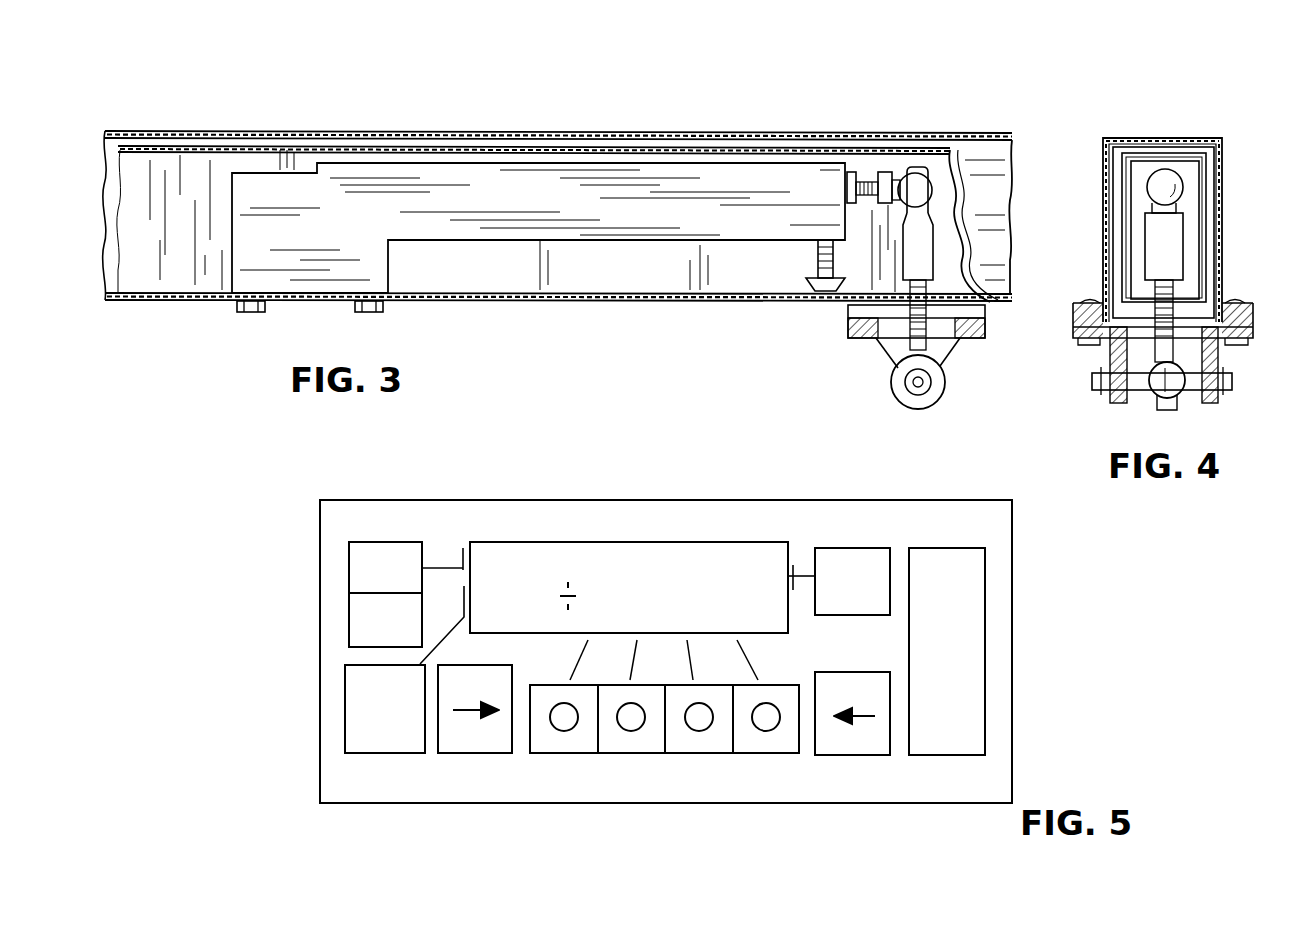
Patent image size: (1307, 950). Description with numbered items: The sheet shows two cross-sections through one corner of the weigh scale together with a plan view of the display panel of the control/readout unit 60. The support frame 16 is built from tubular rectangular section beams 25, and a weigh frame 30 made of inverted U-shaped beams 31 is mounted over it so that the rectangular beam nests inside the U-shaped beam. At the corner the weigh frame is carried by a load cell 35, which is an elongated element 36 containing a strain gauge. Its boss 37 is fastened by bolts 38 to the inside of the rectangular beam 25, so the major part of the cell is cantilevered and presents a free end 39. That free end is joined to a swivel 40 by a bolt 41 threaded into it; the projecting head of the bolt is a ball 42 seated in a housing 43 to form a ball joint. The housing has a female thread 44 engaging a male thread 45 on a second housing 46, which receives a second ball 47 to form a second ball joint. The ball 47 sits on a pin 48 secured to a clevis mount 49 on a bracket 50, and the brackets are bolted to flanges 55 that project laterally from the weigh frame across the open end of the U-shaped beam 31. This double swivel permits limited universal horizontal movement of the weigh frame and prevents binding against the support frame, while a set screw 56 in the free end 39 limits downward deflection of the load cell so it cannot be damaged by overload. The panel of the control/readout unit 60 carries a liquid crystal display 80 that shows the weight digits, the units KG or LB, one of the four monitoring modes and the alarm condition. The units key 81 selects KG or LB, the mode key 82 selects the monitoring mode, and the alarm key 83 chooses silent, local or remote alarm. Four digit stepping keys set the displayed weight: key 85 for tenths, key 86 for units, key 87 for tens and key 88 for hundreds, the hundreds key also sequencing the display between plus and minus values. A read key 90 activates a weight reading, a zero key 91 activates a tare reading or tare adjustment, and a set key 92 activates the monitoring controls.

In FIG. 3, the support frame 16 is at (505, 137).
In FIG. 4, the support frame 16 is at (1214, 165).
In FIG. 3, the tubular rectangular section beam 25 is at (400, 146).
In FIG. 4, the tubular rectangular section beam 25 is at (1204, 208).
In FIG. 3, the weigh frame 30 is at (1013, 132).
In FIG. 4, the weigh frame 30 is at (1224, 140).
In FIG. 3, the inverted U-shaped beam 31 is at (976, 137).
In FIG. 4, the inverted U-shaped beam 31 is at (1224, 225).
In FIG. 3, the load cell 35 is at (258, 318).
In FIG. 4, the load cell 35 is at (1202, 265).
In FIG. 3, the elongated element 36 is at (569, 218).
In FIG. 3, the boss 37 is at (330, 266).
In FIG. 3, the bolts 38 is at (352, 313).
In FIG. 3, the free end 39 is at (835, 212).
In FIG. 3, the swivel 40 is at (922, 168).
In FIG. 4, the swivel 40 is at (1148, 215).
In FIG. 3, the bolt 41 is at (847, 186).
In FIG. 3, the ball 42 is at (935, 190).
In FIG. 4, the ball 42 is at (1168, 183).
In FIG. 3, the housing 43 is at (925, 187).
In FIG. 4, the housing 43 is at (1150, 172).
In FIG. 3, the female thread 44 is at (938, 258).
In FIG. 4, the female thread 44 is at (1170, 258).
In FIG. 3, the male thread 45 is at (930, 300).
In FIG. 4, the male thread 45 is at (1174, 293).
In FIG. 3, the second housing 46 is at (945, 393).
In FIG. 4, the second housing 46 is at (1176, 408).
In FIG. 3, the ball 47 is at (917, 396).
In FIG. 4, the ball 47 is at (1160, 392).
In FIG. 3, the pin 48 is at (912, 382).
In FIG. 4, the pin 48 is at (1233, 381).
In FIG. 3, the clevis mount 49 is at (955, 353).
In FIG. 4, the clevis mount 49 is at (1115, 403).
In FIG. 3, the bracket 50 is at (850, 338).
In FIG. 4, the bracket 50 is at (1254, 330).
In FIG. 3, the flanges 55 is at (1052, 322).
In FIG. 4, the flanges 55 is at (1240, 303).
In FIG. 3, the set screw 56 is at (808, 290).
In FIG. 5, the control/readout unit 60 is at (1035, 641).
In FIG. 5, the liquid crystal display 80 is at (670, 548).
In FIG. 5, the units key 81 is at (856, 556).
In FIG. 5, the mode key 82 is at (380, 548).
In FIG. 5, the alarm key 83 is at (353, 745).
In FIG. 5, the tenths digit stepping key 85 is at (776, 742).
In FIG. 5, the units digit stepping key 86 is at (692, 742).
In FIG. 5, the tens digit stepping key 87 is at (625, 742).
In FIG. 5, the hundreds digit stepping key 88 is at (555, 742).
In FIG. 5, the read key 90 is at (965, 562).
In FIG. 5, the zero key 91 is at (874, 742).
In FIG. 5, the set key 92 is at (456, 738).